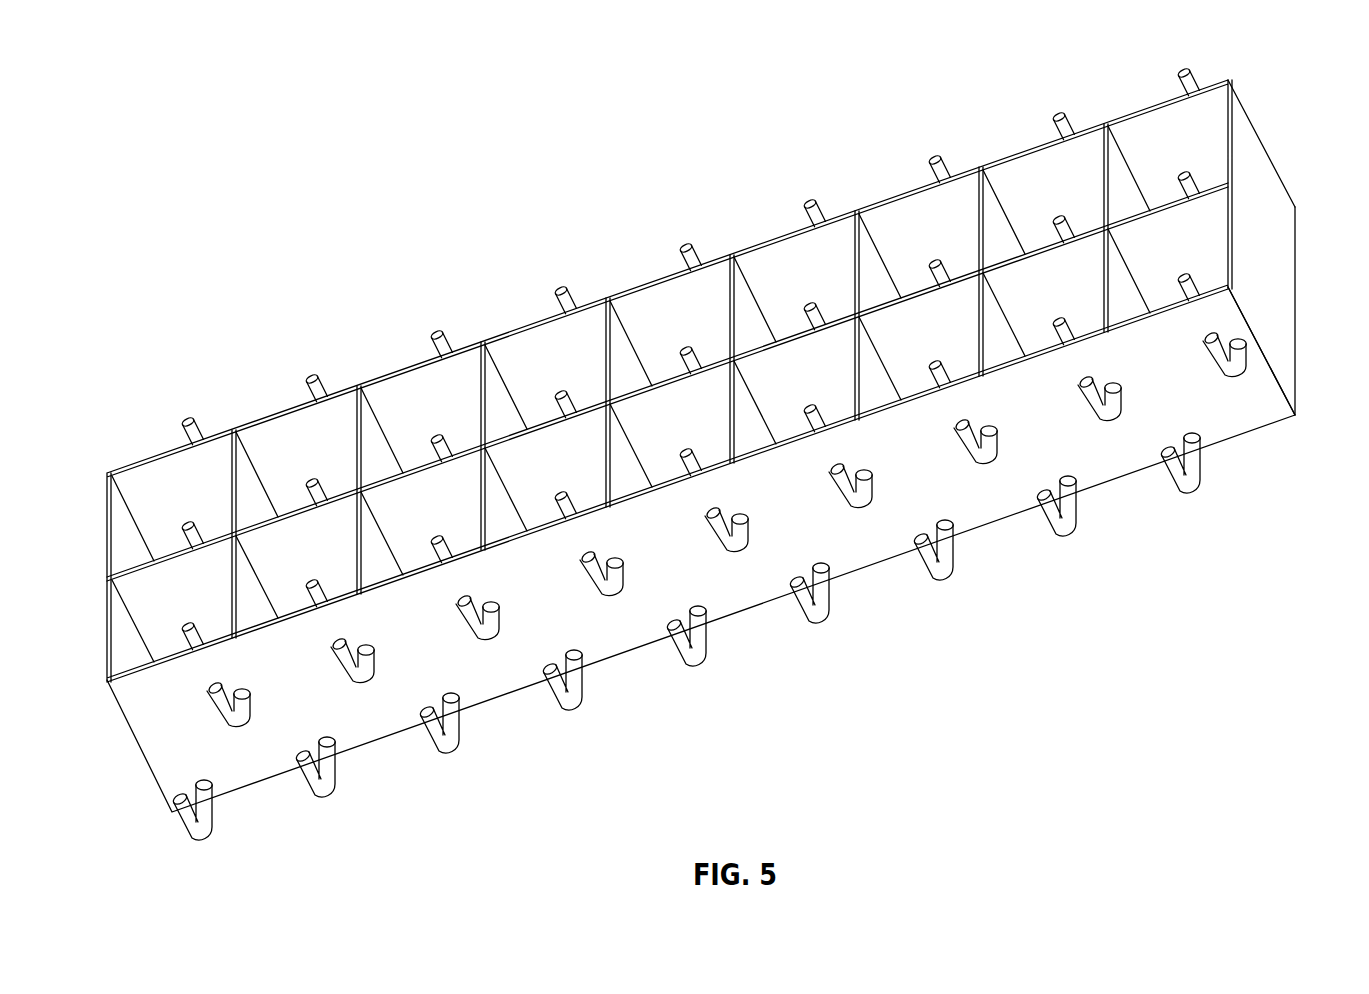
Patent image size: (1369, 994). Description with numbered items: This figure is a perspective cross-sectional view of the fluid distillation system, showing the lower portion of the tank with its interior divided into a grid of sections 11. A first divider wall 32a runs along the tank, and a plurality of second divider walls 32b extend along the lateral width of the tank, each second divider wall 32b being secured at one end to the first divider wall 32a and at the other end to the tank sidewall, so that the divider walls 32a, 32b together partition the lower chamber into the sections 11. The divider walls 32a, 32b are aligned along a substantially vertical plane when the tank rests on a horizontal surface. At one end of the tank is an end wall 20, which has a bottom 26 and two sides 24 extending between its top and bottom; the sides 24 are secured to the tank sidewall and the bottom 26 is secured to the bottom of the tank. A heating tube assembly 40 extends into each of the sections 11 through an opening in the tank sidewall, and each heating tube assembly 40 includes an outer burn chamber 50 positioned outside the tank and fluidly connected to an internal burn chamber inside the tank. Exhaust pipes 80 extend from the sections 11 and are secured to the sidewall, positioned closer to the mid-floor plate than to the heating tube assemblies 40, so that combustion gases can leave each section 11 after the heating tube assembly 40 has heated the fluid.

The section 11 is at (631, 359).
The end wall 20 is at (729, 446).
The side 24 is at (1276, 252).
The bottom 26 is at (1330, 311).
The first divider wall 32a is at (633, 382).
The second divider wall 32b is at (626, 381).
The heating tube assembly 40 is at (731, 453).
The outer burn chamber 50 is at (1162, 475).
The exhaust pipe 80 is at (726, 449).